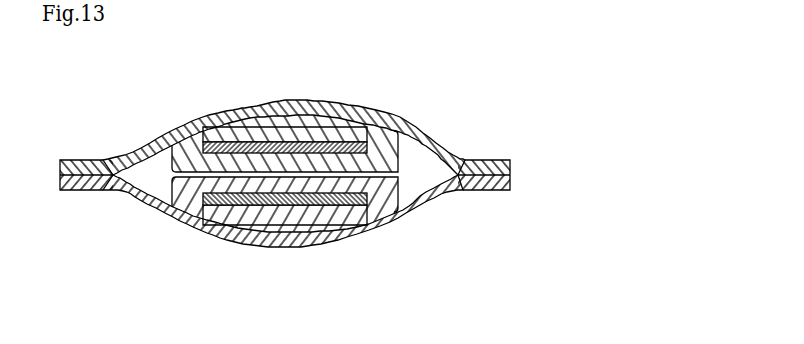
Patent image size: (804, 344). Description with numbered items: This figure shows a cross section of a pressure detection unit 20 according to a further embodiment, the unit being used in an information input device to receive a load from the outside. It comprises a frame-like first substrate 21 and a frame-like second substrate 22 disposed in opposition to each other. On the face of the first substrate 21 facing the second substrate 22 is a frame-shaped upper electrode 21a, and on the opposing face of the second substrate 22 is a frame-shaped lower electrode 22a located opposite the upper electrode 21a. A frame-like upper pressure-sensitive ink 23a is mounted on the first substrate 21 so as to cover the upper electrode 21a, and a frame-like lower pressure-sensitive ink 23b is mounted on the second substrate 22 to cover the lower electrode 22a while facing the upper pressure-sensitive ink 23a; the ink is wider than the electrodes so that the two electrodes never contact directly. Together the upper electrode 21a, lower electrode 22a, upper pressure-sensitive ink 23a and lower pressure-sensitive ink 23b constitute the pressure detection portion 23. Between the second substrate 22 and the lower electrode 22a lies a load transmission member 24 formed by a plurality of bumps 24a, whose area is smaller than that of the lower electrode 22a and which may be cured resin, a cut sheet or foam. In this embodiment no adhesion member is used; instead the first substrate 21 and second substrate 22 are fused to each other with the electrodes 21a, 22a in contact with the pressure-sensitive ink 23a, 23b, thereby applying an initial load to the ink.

The pressure detection unit 20 is at (293, 175).
The first substrate 21 is at (216, 112).
The second substrate 22 is at (262, 242).
The pressure detection portion 23 is at (284, 175).
The upper pressure-sensitive ink 23a is at (178, 147).
The lower pressure-sensitive ink 23b is at (183, 207).
The upper electrode 21a is at (320, 140).
The lower electrode 22a is at (320, 200).
The load transmission member 24 is at (285, 175).
The bumps 24a is at (266, 118).